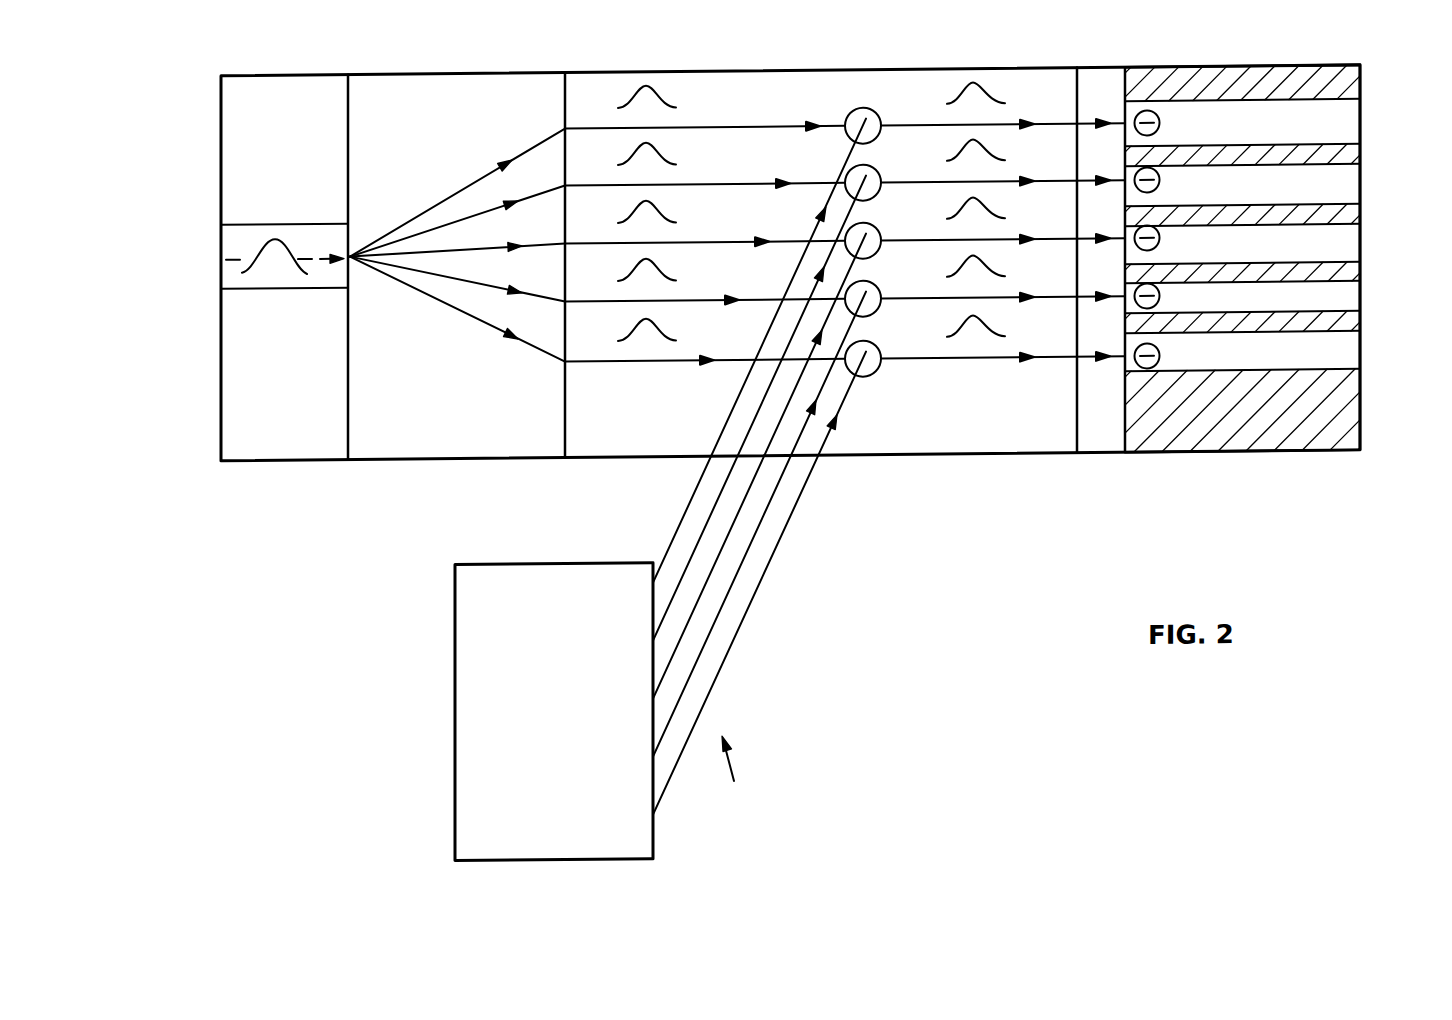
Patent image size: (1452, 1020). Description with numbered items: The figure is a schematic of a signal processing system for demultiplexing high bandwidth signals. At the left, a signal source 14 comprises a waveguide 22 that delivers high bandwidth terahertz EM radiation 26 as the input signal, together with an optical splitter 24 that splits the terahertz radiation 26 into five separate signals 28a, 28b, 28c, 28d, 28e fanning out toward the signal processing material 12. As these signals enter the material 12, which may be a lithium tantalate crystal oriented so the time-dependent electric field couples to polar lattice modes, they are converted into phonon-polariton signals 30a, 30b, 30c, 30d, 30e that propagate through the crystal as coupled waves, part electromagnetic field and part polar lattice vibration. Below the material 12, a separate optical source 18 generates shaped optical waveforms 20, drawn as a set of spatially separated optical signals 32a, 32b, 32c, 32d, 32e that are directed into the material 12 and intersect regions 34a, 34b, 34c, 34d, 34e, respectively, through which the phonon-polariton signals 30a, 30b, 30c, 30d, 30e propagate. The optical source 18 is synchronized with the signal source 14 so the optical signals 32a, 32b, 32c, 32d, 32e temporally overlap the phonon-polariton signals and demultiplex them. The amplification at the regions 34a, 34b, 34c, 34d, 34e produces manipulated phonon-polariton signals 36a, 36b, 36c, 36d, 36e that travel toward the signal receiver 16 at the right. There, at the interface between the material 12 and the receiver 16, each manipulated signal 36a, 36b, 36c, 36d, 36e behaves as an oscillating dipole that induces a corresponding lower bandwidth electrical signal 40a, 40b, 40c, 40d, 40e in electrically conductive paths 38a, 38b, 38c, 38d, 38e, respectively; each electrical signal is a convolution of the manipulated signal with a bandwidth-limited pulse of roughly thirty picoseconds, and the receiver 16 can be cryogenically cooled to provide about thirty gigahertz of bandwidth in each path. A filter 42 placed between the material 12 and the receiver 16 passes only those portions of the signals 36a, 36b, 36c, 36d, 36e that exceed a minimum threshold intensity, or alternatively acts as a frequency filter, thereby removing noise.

The optical-processing material 12 is at (1000, 451).
The signal source 14 is at (445, 475).
The signal receiver 16 is at (1243, 464).
The optical source 18 is at (507, 867).
The optical waveforms 20 is at (738, 774).
The waveguide 22 is at (273, 270).
The optical splitter 24 is at (441, 441).
The terahertz EM radiation 26 is at (275, 238).
The separate signal 28a is at (418, 216).
The separate signal 28b is at (455, 226).
The separate signal 28c is at (485, 252).
The separate signal 28d is at (462, 284).
The separate signal 28e is at (403, 289).
The phonon-polariton signal 30a is at (663, 102).
The phonon-polariton signal 30b is at (663, 159).
The phonon-polariton signal 30c is at (663, 217).
The phonon-polariton signal 30d is at (663, 275).
The phonon-polariton signal 30e is at (663, 335).
The optical signal 32a is at (666, 564).
The optical signal 32b is at (703, 540).
The optical signal 32c is at (707, 594).
The optical signal 32d is at (742, 578).
The optical signal 32e is at (781, 549).
The region 34a is at (872, 120).
The region 34b is at (872, 177).
The region 34c is at (872, 235).
The region 34d is at (872, 293).
The region 34e is at (872, 353).
The manipulated phonon-polariton signal 36a is at (993, 100).
The manipulated phonon-polariton signal 36b is at (993, 157).
The manipulated phonon-polariton signal 36c is at (993, 215).
The manipulated phonon-polariton signal 36d is at (993, 273).
The manipulated phonon-polariton signal 36e is at (993, 333).
The conductive path 38a is at (1322, 140).
The conductive path 38b is at (1318, 203).
The conductive path 38c is at (1318, 261).
The conductive path 38d is at (1325, 311).
The conductive path 38e is at (1325, 365).
The electrical signal 40a is at (1162, 137).
The electrical signal 40b is at (1160, 191).
The electrical signal 40c is at (1160, 249).
The electrical signal 40d is at (1160, 307).
The electrical signal 40e is at (1160, 367).
The filter 42 is at (1107, 451).